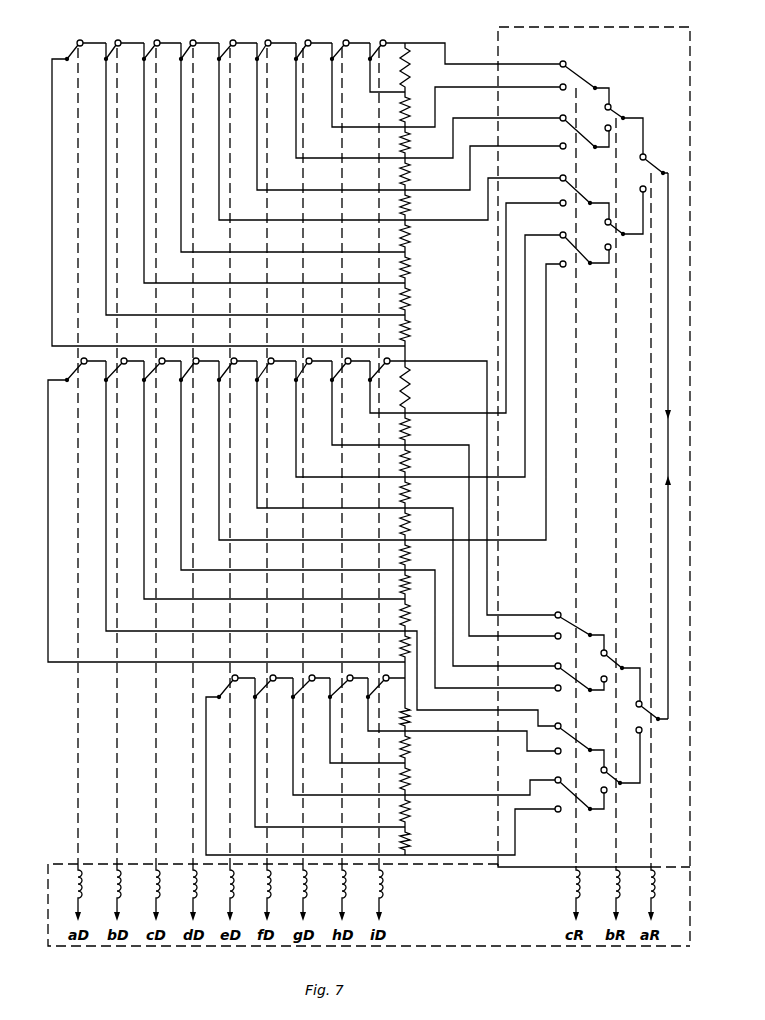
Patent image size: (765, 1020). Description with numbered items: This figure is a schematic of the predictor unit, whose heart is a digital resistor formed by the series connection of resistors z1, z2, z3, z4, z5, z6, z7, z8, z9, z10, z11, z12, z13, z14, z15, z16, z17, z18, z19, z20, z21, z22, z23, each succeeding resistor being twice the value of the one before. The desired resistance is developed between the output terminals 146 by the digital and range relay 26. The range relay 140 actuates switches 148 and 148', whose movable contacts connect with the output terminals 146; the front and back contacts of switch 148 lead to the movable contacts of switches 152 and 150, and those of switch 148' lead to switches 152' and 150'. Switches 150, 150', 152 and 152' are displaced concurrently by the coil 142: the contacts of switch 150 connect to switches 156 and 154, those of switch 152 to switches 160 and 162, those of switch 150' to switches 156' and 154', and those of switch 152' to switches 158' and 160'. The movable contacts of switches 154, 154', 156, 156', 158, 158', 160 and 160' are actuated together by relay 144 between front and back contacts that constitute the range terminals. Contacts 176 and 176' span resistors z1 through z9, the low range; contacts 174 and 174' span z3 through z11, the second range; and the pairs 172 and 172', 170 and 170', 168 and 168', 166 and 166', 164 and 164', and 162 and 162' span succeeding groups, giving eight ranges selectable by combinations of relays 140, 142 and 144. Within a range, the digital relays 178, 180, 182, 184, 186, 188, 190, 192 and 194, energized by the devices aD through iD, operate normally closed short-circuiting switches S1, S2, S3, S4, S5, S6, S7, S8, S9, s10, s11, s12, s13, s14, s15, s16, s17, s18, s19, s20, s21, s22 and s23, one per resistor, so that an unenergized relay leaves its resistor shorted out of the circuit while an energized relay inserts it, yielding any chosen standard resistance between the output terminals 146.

The digital and range relay 26 is at (690, 72).
The output terminals 146 is at (672, 468).
The switch 148 is at (661, 731).
The switch 148' is at (665, 152).
The switch 150 is at (626, 673).
The switch 150' is at (633, 126).
The switch 152 is at (626, 771).
The switch 152' is at (630, 227).
The switch 154 is at (583, 630).
The switch 154' is at (593, 82).
The switch 156 is at (584, 695).
The switch 156' is at (589, 146).
The switch 158 is at (586, 750).
The switch 158' is at (593, 202).
The switch 160 is at (584, 812).
The switch 160' is at (588, 268).
The contact 162 is at (545, 802).
The contact 162' is at (547, 255).
The contact 164 is at (543, 772).
The contact 164' is at (543, 226).
The contact 166 is at (545, 744).
The contact 166' is at (540, 195).
The contact 168 is at (555, 716).
The contact 168' is at (538, 170).
The contact 170 is at (536, 685).
The contact 170' is at (542, 137).
The contact 172 is at (538, 659).
The contact 172' is at (543, 109).
The contact 174 is at (538, 629).
The contact 174' is at (542, 80).
The contact 176 is at (544, 603).
The contact 176' is at (579, 50).
The digital relay 178 is at (75, 895).
The digital relay 180 is at (114, 895).
The digital relay 182 is at (153, 895).
The digital relay 184 is at (190, 895).
The digital relay 186 is at (227, 895).
The digital relay 188 is at (264, 895).
The digital relay 190 is at (300, 895).
The digital relay 192 is at (339, 895).
The digital relay 194 is at (376, 895).
The range relay 140 is at (655, 895).
The range relay 142 is at (613, 895).
The range relay 144 is at (573, 895).
The short-circuiting switch S1 is at (379, 56).
The short-circuiting switch S2 is at (360, 73).
The short-circuiting switch S3 is at (341, 89).
The short-circuiting switch S4 is at (321, 105).
The short-circuiting switch S5 is at (304, 120).
The short-circuiting switch S6 is at (284, 136).
The short-circuiting switch S7 is at (266, 151).
The short-circuiting switch S8 is at (246, 167).
The short-circuiting switch S9 is at (227, 183).
The short-circuiting switch s10 is at (388, 385).
The short-circuiting switch s11 is at (368, 401).
The short-circuiting switch s12 is at (350, 417).
The short-circuiting switch s13 is at (331, 433).
The short-circuiting switch s14 is at (312, 449).
The short-circuiting switch s15 is at (293, 464).
The short-circuiting switch s16 is at (274, 478).
The short-circuiting switch s17 is at (255, 494).
The short-circuiting switch s18 is at (226, 510).
The short-circuiting switch s19 is at (386, 703).
The short-circuiting switch s20 is at (367, 719).
The short-circuiting switch s21 is at (349, 735).
The short-circuiting switch s22 is at (330, 751).
The short-circuiting switch s23 is at (305, 765).
The resistor z1 is at (411, 68).
The resistor z2 is at (411, 110).
The resistor z3 is at (411, 142).
The resistor z4 is at (411, 174).
The resistor z5 is at (411, 205).
The resistor z6 is at (411, 236).
The resistor z7 is at (411, 268).
The resistor z8 is at (411, 299).
The resistor z9 is at (411, 330).
The resistor z10 is at (411, 388).
The resistor z11 is at (411, 429).
The resistor z12 is at (411, 461).
The resistor z13 is at (411, 493).
The resistor z14 is at (411, 524).
The resistor z15 is at (411, 555).
The resistor z16 is at (411, 585).
The resistor z17 is at (411, 615).
The resistor z18 is at (399, 647).
The resistor z19 is at (411, 717).
The resistor z20 is at (411, 747).
The resistor z21 is at (411, 779).
The resistor z22 is at (411, 811).
The resistor z23 is at (411, 841).